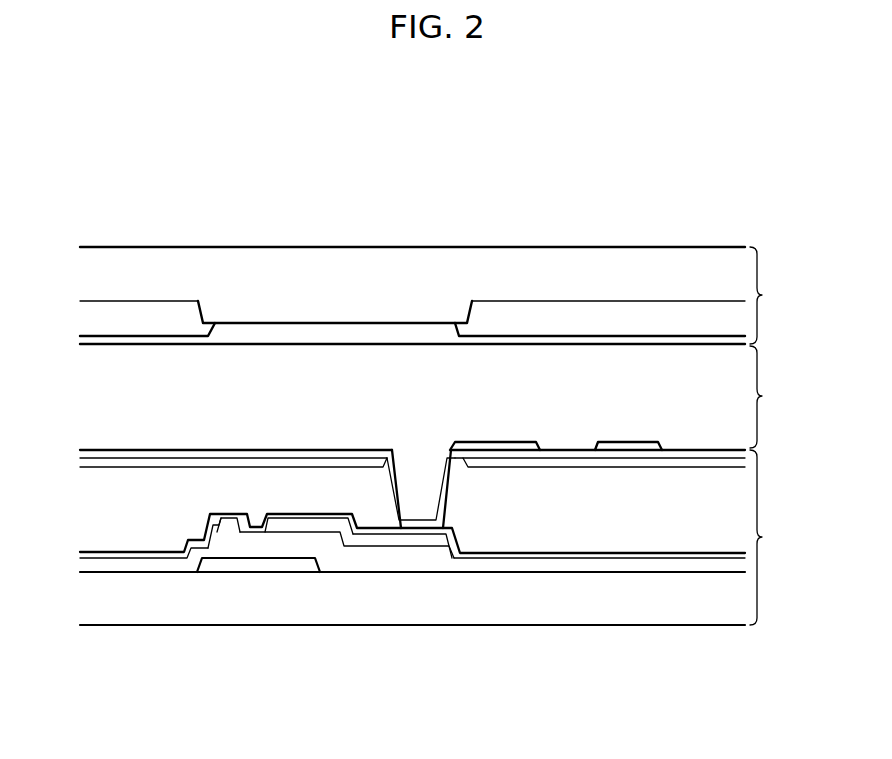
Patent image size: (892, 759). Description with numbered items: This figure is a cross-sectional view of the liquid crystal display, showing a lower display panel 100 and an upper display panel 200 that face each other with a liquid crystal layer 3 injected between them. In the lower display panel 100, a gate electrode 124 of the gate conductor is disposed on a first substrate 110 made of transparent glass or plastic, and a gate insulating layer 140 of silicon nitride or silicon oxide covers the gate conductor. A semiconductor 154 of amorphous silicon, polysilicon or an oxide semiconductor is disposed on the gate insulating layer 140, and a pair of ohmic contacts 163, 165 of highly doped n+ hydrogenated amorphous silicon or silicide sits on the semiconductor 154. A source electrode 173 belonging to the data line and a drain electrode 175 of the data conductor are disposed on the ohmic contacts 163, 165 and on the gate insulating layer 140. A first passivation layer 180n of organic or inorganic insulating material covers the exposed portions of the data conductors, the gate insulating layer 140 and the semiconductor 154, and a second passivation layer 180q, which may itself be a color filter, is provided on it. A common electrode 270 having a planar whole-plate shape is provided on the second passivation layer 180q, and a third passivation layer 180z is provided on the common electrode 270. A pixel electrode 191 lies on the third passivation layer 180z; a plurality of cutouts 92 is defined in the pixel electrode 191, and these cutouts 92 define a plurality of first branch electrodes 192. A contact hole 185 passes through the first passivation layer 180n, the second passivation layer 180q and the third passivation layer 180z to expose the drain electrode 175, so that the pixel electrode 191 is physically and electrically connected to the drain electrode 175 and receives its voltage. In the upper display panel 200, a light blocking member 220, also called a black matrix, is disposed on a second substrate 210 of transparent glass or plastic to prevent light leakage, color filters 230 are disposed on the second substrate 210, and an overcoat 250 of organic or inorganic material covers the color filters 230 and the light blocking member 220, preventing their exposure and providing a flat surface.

The second substrate 210 is at (645, 268).
The light blocking member 220 is at (289, 312).
The color filter 230 is at (150, 316).
The overcoat 250 is at (384, 336).
The upper display panel 200 is at (778, 295).
The liquid crystal layer 3 is at (764, 397).
The lower display panel 100 is at (778, 537).
The first substrate 110 is at (712, 604).
The gate electrode 124 is at (262, 566).
The gate insulating layer 140 is at (132, 566).
The semiconductor 154 is at (363, 556).
The ohmic contact 163 is at (221, 530).
The ohmic contact 165 is at (397, 546).
The source electrode 173 is at (232, 524).
The drain electrode 175 is at (438, 538).
The first passivation layer 180n is at (565, 559).
The second passivation layer 180q is at (625, 521).
The third passivation layer 180z is at (710, 455).
The contact hole 185 is at (452, 494).
The pixel electrode 191 is at (508, 446).
The first branch electrode 192 is at (631, 446).
The cutout 92 is at (595, 447).
The common electrode 270 is at (662, 466).